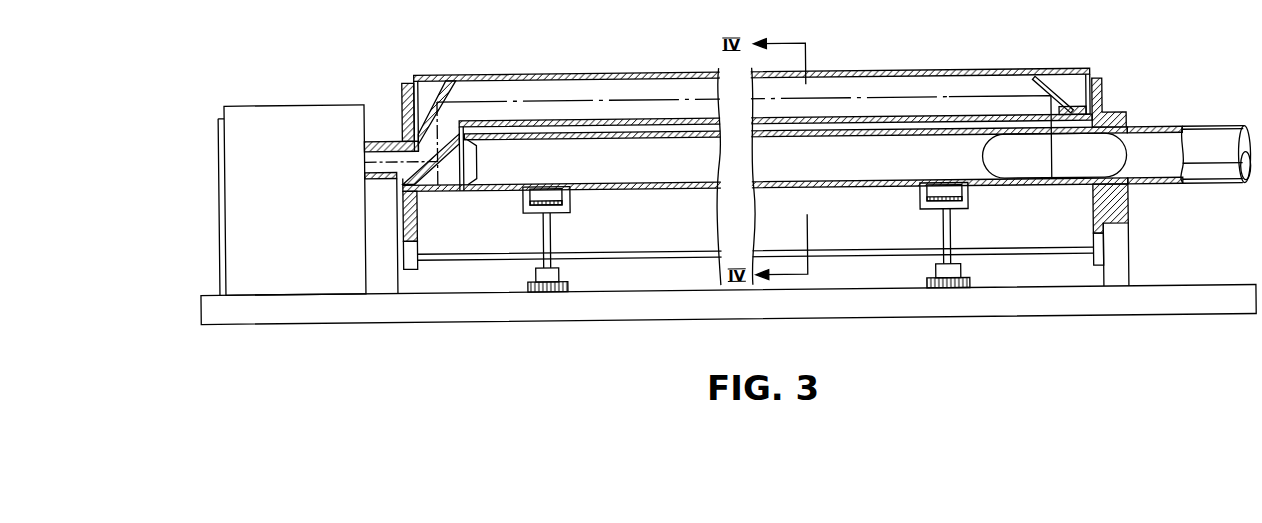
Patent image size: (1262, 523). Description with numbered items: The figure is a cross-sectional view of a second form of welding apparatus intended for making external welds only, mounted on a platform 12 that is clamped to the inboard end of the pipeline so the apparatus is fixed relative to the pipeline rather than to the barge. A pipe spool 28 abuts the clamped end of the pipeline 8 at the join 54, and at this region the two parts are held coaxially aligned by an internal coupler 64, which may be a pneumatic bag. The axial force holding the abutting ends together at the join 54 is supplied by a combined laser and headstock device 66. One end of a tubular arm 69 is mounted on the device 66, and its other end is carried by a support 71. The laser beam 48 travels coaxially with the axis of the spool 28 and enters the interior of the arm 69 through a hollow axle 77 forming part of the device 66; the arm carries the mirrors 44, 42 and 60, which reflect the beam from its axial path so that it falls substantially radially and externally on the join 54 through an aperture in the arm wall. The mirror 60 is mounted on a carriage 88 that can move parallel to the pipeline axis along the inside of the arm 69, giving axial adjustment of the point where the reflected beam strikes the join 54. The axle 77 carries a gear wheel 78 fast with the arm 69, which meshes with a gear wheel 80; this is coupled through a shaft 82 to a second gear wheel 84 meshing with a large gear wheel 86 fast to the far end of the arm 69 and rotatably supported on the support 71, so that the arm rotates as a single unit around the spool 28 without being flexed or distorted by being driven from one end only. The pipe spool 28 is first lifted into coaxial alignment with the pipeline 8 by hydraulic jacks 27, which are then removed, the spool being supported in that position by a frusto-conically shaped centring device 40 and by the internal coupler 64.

The pipeline 8 is at (1158, 132).
The platform 12 is at (790, 306).
The hydraulic jacks 27 is at (543, 275).
The pipe spool 28 is at (692, 188).
The centring device 40 is at (470, 179).
The mirror 42 is at (437, 92).
The mirror 44 is at (444, 183).
The laser beam 48 is at (548, 96).
The join 54 is at (1050, 173).
The mirror 60 is at (1038, 81).
The internal coupler 64 is at (1005, 148).
The combined laser and headstock device 66 is at (272, 120).
The tubular arm 69 is at (612, 72).
The support 71 is at (1118, 271).
The hollow axle 77 is at (388, 138).
The gear wheel 78 is at (410, 81).
The gear wheel 80 is at (412, 262).
The shaft 82 is at (645, 252).
The second gear wheel 84 is at (1100, 262).
The large gear wheel 86 is at (1100, 102).
The carriage 88 is at (1078, 113).